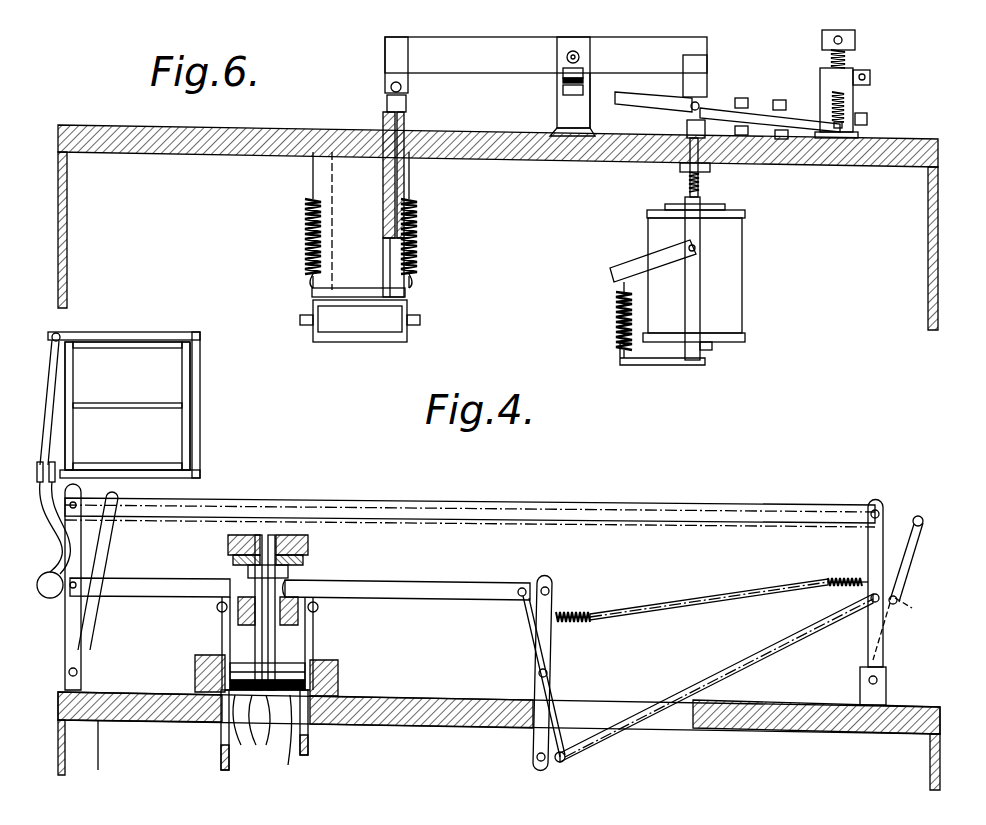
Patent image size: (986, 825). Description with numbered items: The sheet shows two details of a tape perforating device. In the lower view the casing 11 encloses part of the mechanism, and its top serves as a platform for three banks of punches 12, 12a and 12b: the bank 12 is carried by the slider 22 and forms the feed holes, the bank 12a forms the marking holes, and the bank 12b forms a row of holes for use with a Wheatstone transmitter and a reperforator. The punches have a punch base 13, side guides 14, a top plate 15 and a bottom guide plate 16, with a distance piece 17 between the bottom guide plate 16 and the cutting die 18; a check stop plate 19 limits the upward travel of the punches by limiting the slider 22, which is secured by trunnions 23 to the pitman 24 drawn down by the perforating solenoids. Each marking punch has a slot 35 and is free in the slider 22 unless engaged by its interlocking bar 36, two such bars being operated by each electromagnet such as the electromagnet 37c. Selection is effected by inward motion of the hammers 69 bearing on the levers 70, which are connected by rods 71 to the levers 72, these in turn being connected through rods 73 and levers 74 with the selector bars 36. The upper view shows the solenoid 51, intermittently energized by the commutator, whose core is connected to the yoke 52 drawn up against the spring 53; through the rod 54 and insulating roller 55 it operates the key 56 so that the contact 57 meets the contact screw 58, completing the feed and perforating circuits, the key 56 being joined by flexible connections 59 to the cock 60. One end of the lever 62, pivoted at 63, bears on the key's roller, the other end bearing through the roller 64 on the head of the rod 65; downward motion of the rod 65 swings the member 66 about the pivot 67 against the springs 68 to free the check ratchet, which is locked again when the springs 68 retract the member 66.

In FIG. 4, the casing 11 is at (127, 722).
In FIG. 4, the bank of spacing punches 12 is at (300, 668).
In FIG. 4, the bank of marking punches 12a is at (230, 686).
In FIG. 4, the third bank of punches 12b is at (306, 674).
In FIG. 4, the punch base 13 is at (194, 682).
In FIG. 4, the side guides 14 is at (248, 570).
In FIG. 4, the top plate 15 is at (228, 538).
In FIG. 4, the bottom guide plate 16 is at (212, 700).
In FIG. 4, the distance piece 17 is at (268, 735).
In FIG. 4, the cutting die 18 is at (265, 726).
In FIG. 4, the check stop plate 19 is at (233, 560).
In FIG. 4, the slider 22 is at (222, 592).
In FIG. 4, the trunnions 23 is at (218, 612).
In FIG. 4, the pitman 24 is at (221, 748).
In FIG. 4, the slot 35 is at (238, 612).
In FIG. 4, the interlocking bar 36 is at (138, 598).
In FIG. 4, the electromagnet 37c is at (132, 363).
In FIG. 6, the solenoid 51 is at (731, 240).
In FIG. 6, the yoke 52 is at (693, 295).
In FIG. 6, the spring 53 is at (616, 322).
In FIG. 6, the rod 54 is at (699, 188).
In FIG. 6, the insulating roller 55 is at (700, 105).
In FIG. 6, the key 56 is at (792, 120).
In FIG. 6, the contact 57 is at (860, 118).
In FIG. 6, the contact screw 58 is at (845, 58).
In FIG. 6, the flexible connections 59 is at (603, 90).
In FIG. 6, the cock 60 is at (560, 117).
In FIG. 6, the lever 62 is at (622, 50).
In FIG. 6, the pivot 63 is at (566, 62).
In FIG. 6, the roller 64 is at (387, 100).
In FIG. 6, the rod 65 is at (404, 125).
In FIG. 6, the member 66 is at (408, 300).
In FIG. 6, the pivot 67 is at (300, 320).
In FIG. 6, the springs 68 is at (305, 236).
In FIG. 4, the hammers 69 is at (50, 596).
In FIG. 4, the levers 70 is at (72, 620).
In FIG. 4, the rods 71 is at (420, 498).
In FIG. 4, the levers 72 is at (883, 565).
In FIG. 4, the rods 73 is at (738, 670).
In FIG. 4, the levers 74 is at (552, 643).